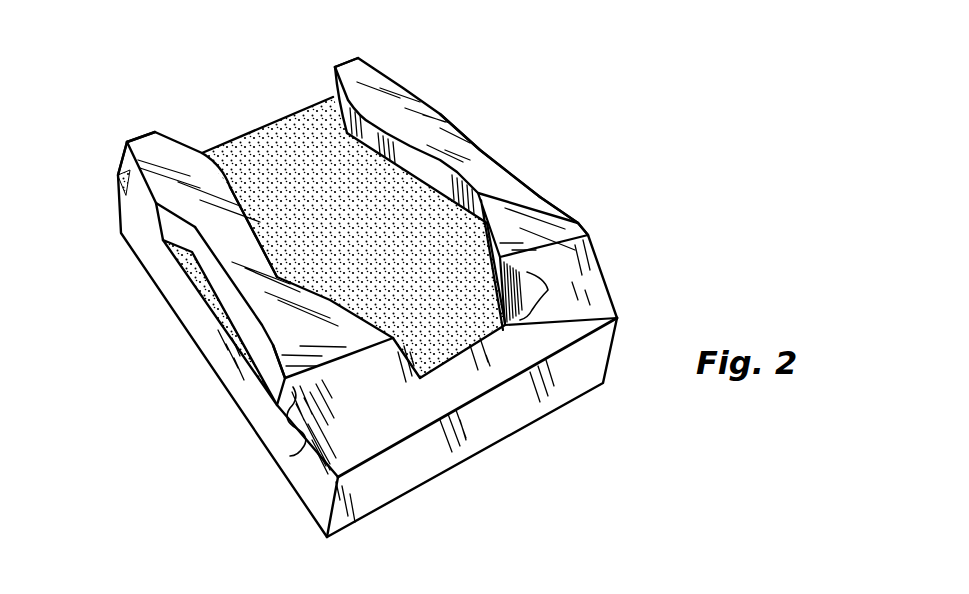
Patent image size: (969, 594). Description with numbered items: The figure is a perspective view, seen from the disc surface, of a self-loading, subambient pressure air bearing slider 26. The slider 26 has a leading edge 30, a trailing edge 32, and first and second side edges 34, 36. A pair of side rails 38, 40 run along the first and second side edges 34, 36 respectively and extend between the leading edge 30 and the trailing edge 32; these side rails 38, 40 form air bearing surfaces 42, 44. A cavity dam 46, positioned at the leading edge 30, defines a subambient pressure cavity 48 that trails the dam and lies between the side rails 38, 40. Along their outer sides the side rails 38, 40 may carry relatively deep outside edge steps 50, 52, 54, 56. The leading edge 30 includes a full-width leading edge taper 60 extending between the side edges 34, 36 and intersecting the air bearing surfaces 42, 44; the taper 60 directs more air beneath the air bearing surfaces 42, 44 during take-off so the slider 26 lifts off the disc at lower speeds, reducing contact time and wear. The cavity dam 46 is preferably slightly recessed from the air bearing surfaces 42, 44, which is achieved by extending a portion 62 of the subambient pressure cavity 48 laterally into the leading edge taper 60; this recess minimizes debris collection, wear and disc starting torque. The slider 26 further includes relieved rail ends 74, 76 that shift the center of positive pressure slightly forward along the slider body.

The slider 26 is at (200, 360).
The leading edge 30 is at (393, 443).
The trailing edge 32 is at (247, 130).
The first side edge 34 is at (283, 410).
The second side edge 36 is at (578, 222).
The side rail 38 is at (193, 199).
The side rail 40 is at (412, 84).
The air bearing surface 42 is at (220, 218).
The air bearing surface 44 is at (423, 122).
The cavity dam 46 is at (457, 378).
The subambient pressure cavity 48 is at (317, 157).
The outside edge step 50 is at (163, 283).
The outside edge step 52 is at (119, 173).
The outside edge step 54 is at (477, 153).
The outside edge step 56 is at (372, 62).
The leading edge taper 60 is at (297, 447).
The portion of subambient pressure cavity 62 is at (557, 285).
The relieved rail end 74 is at (173, 133).
The relieved rail end 76 is at (335, 90).